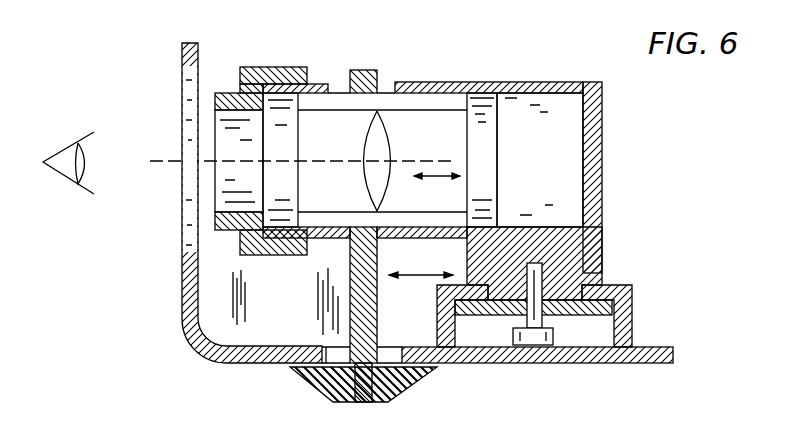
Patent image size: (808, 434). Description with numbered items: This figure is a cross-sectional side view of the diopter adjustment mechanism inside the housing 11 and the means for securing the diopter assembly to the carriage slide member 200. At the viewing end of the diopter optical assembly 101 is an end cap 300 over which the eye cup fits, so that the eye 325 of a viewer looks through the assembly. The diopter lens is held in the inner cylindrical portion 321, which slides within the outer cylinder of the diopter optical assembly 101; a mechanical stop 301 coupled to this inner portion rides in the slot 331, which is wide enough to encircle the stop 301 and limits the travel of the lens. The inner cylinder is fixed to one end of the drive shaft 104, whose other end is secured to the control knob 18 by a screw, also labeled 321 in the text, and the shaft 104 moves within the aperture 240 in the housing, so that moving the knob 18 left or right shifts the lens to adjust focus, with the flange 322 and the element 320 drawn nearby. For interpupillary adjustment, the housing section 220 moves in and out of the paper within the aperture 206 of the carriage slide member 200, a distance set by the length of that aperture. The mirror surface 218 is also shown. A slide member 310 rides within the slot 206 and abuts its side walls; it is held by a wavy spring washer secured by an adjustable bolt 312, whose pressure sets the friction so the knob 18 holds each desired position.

The housing 11 is at (182, 215).
The control knob 18 is at (425, 386).
The diopter optical assembly 101 is at (462, 82).
The drive shaft 104 is at (378, 263).
The carriage slide member 200 is at (635, 313).
The aperture 206 is at (572, 286).
The mirror surface 218 is at (552, 108).
The housing section 220 is at (603, 133).
The aperture 240 is at (395, 350).
The end cap 300 is at (285, 67).
The mechanical stop 301 is at (367, 70).
The slide member 310 is at (562, 318).
The adjustable bolt 312 is at (565, 270).
The filter element 320 is at (447, 222).
The inner cylindrical portion 321 is at (363, 402).
The rear flange 322 is at (338, 232).
The eye 325 is at (80, 143).
The slot 331 is at (393, 82).